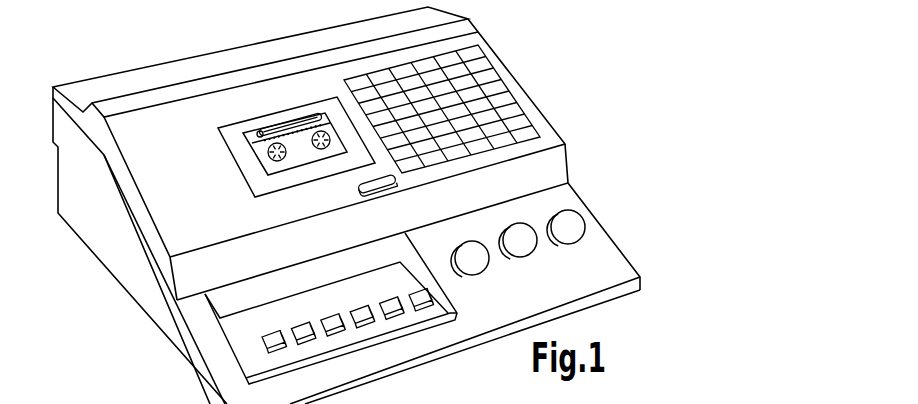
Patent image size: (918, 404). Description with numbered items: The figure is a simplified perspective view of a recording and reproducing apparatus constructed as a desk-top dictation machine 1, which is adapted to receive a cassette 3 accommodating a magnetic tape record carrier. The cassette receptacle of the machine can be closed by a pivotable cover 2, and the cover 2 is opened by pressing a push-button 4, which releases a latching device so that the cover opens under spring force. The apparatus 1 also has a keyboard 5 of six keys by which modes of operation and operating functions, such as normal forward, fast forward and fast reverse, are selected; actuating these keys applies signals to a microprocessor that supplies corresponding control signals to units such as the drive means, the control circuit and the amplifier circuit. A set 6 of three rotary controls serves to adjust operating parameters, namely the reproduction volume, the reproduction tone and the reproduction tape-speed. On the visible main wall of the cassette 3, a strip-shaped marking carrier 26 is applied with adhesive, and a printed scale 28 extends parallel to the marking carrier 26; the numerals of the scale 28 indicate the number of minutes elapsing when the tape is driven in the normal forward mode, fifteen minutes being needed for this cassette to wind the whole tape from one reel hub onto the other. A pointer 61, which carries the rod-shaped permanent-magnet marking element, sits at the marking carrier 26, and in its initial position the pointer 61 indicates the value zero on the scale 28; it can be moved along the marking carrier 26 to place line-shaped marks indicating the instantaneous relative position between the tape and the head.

The desk-top dictation machine 1 is at (545, 110).
The pivotable cover 2 is at (238, 148).
The cassette 3 is at (296, 158).
The push-button 4 is at (357, 183).
The keyboard 5 is at (455, 315).
The set of three rotary controls 6 is at (541, 253).
The strip-shaped marking carrier 26 is at (288, 127).
The printed scale 28 is at (320, 123).
The pointer 61 is at (258, 131).